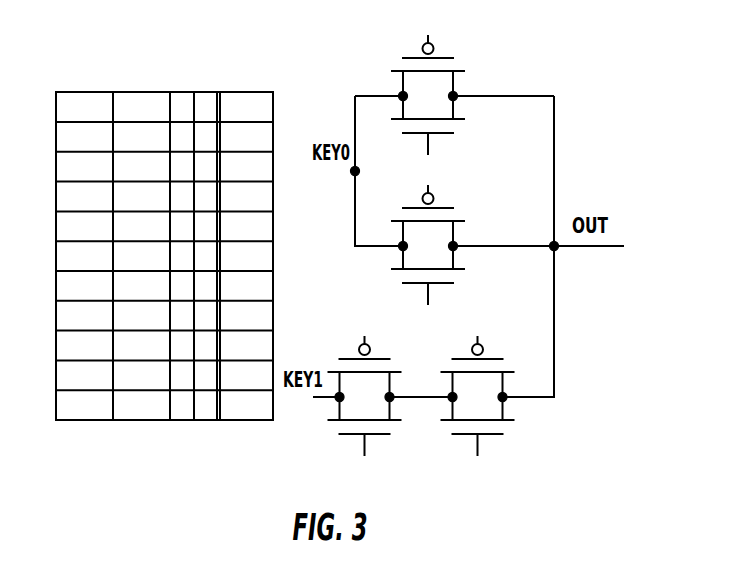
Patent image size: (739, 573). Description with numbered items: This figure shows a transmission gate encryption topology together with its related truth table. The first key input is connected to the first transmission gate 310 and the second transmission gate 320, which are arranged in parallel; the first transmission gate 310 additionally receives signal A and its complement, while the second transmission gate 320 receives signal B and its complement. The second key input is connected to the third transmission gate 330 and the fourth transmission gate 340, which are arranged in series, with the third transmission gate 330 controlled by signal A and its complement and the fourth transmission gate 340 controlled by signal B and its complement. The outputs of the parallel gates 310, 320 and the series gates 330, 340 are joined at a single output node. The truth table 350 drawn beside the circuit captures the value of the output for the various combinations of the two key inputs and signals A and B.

The transmission gate 1 310 is at (455, 84).
The transmission gate 2 320 is at (455, 237).
The transmission gate 3 330 is at (339, 407).
The transmission gate 4 340 is at (503, 408).
The truth table 350 is at (265, 62).